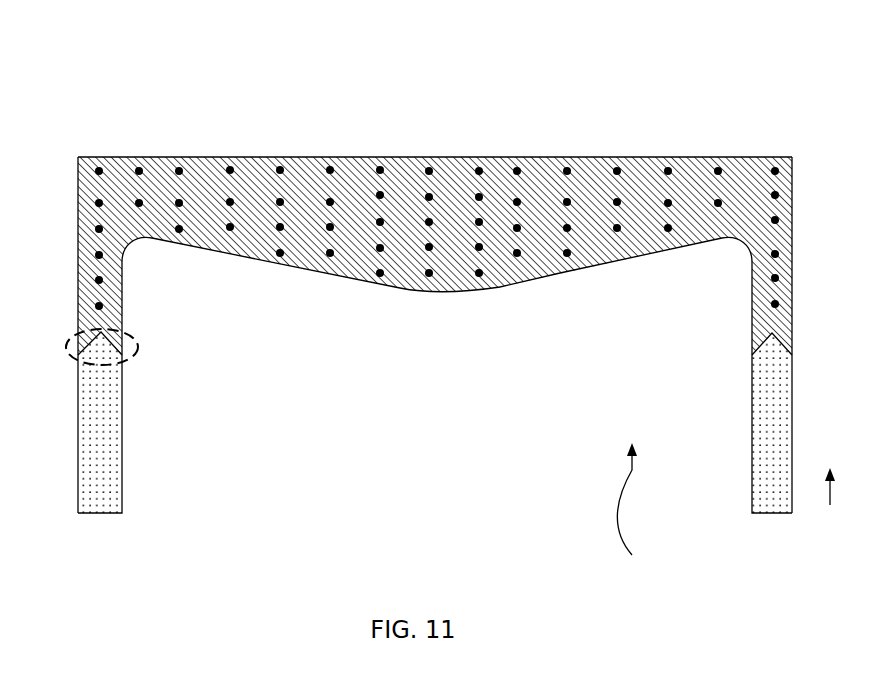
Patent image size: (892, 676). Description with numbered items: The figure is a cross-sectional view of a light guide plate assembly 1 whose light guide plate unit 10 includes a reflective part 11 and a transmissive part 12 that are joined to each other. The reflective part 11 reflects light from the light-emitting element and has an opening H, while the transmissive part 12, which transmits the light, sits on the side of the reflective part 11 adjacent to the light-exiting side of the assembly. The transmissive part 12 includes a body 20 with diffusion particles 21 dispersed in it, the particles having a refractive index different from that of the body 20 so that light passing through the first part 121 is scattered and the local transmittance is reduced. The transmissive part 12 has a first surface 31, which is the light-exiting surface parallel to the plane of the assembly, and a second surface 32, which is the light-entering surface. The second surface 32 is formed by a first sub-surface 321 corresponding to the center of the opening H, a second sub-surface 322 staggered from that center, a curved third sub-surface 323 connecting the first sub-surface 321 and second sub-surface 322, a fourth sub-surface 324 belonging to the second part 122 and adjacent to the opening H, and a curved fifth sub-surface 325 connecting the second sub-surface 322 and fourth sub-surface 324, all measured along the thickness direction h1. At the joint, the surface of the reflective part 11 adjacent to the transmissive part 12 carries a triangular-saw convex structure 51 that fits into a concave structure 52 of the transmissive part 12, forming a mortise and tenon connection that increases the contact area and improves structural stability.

The light guide plate assembly 1 is at (400, 306).
The light guide plate unit 10 is at (400, 306).
The transmissive part 12 is at (433, 273).
The reflective part 11 is at (400, 454).
The body 20 is at (690, 157).
The diffusion particles 21 is at (563, 157).
The first surface 31 is at (610, 157).
The second surface 32 is at (437, 296).
The first part 121 is at (360, 170).
The second part 122 is at (104, 157).
The first sub-surface 321 is at (452, 291).
The second sub-surface 322 is at (628, 262).
The third sub-surface 323 is at (492, 288).
The fourth sub-surface 324 is at (713, 314).
The fifth sub-surface 325 is at (735, 245).
The convex structure 51 is at (400, 376).
The concave structure 52 is at (72, 356).
The opening H is at (628, 512).
The thickness direction h1 is at (819, 474).